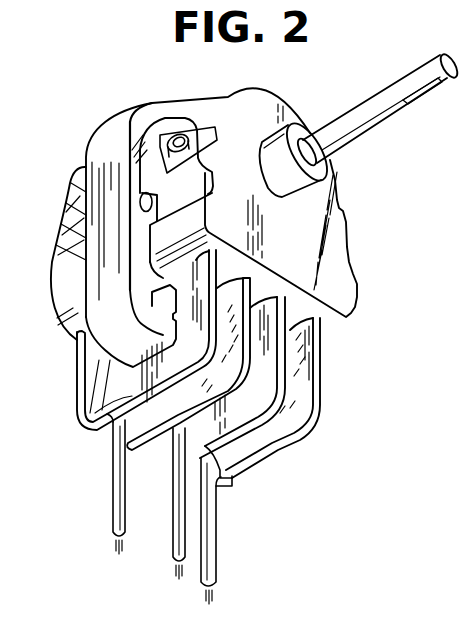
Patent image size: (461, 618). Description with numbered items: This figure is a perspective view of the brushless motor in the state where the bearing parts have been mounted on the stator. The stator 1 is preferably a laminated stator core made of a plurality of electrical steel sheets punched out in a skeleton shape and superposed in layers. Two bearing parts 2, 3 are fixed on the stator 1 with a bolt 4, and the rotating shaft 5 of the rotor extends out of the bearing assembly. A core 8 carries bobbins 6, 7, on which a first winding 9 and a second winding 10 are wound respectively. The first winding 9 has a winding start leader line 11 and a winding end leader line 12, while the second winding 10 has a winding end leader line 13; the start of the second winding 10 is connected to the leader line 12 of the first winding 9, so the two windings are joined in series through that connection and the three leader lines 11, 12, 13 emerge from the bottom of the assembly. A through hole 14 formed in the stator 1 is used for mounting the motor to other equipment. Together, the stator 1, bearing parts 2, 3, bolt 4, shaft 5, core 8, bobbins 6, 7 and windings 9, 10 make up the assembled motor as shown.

The stator 1 is at (107, 138).
The bearing part 2 is at (265, 105).
The bearing part 3 is at (52, 308).
The bolt 4 is at (168, 132).
The rotating shaft 5 is at (411, 82).
The bobbin 6 is at (308, 420).
The bobbin 7 is at (87, 423).
The core 8 is at (157, 313).
The first winding 9 is at (265, 435).
The second winding 10 is at (155, 418).
The winding start leader line 11 is at (215, 557).
The winding end leader line 12 is at (172, 546).
The winding end leader line 13 is at (112, 512).
The through hole 14 is at (139, 203).